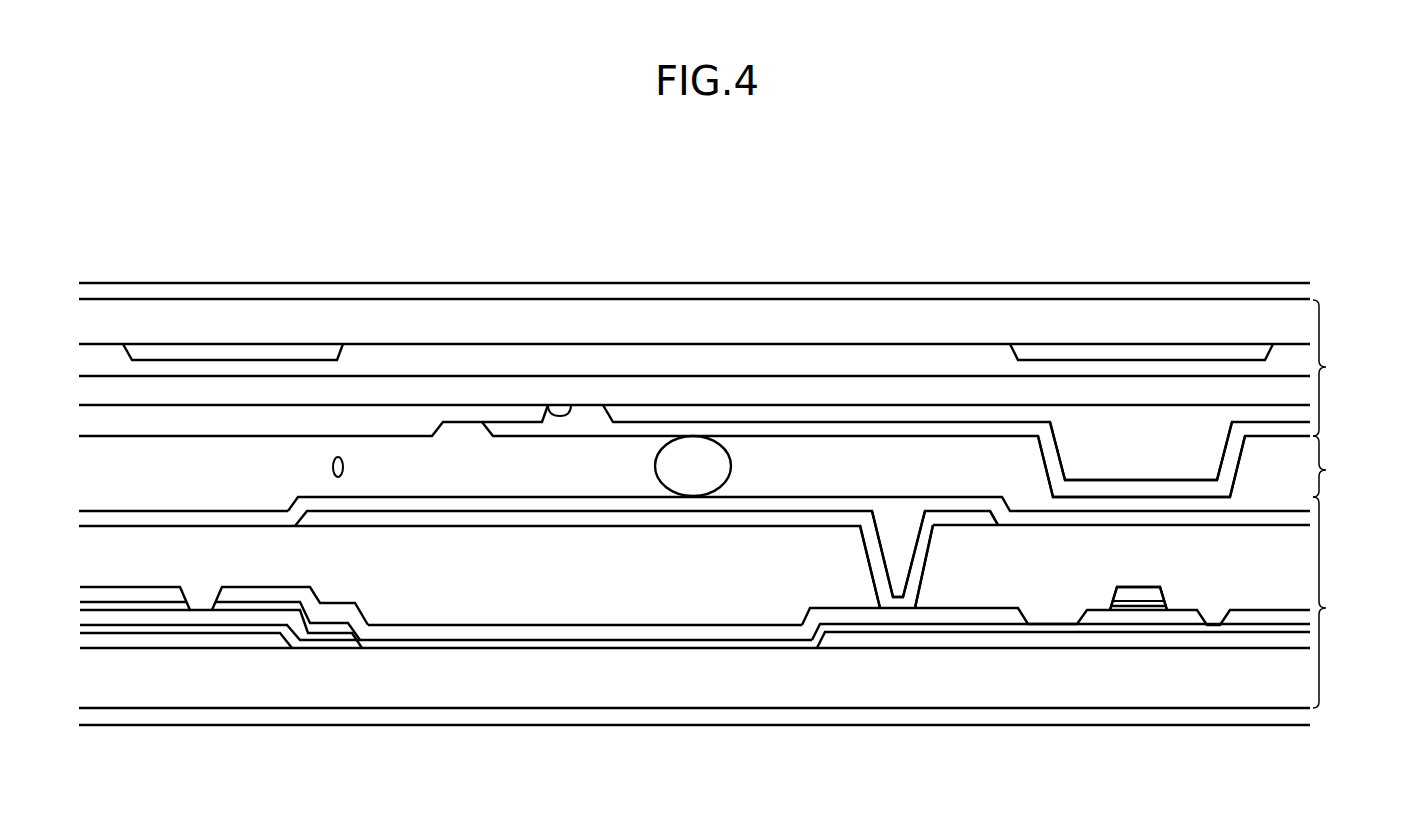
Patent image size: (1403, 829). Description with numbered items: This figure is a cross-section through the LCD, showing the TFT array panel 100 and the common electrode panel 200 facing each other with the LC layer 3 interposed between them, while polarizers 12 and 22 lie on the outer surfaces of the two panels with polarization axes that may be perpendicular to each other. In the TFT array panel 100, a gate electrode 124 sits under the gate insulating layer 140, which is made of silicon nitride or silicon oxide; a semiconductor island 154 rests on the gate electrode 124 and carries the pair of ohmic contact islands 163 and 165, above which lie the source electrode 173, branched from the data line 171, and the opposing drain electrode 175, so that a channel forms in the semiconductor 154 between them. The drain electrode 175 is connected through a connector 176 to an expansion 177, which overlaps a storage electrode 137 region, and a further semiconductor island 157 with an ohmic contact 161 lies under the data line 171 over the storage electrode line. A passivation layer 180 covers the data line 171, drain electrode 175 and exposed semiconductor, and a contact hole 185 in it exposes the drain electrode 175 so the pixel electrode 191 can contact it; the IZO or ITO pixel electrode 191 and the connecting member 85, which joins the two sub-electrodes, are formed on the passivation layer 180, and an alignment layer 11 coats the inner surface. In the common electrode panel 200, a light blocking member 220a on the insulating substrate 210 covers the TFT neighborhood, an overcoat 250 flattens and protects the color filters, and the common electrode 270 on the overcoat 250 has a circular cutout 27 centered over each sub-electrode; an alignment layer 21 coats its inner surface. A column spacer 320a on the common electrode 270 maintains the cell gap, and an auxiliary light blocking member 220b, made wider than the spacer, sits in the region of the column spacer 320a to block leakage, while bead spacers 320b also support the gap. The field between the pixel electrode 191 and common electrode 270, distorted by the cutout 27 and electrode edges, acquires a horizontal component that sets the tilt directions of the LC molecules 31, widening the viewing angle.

The polarizer 22 is at (1311, 291).
The common electrode panel 200 is at (1339, 368).
The LC layer 3 is at (1327, 466).
The TFT array panel 100 is at (1339, 602).
The polarizer 12 is at (1311, 718).
The insulating substrate 210 is at (880, 310).
The light blocking member 220a is at (250, 354).
The auxiliary light blocking member 220b is at (1100, 351).
The overcoat 250 is at (488, 388).
The common electrode 270 is at (388, 412).
The cutout 27 is at (571, 404).
The alignment layer 21 is at (797, 425).
The column spacer 320a is at (1167, 437).
The bead spacer 320b is at (732, 463).
The LC molecule 31 is at (343, 468).
The alignment layer 11 is at (532, 503).
The pixel electrode 191 is at (593, 518).
The passivation layer 180 is at (672, 612).
The contact hole 185 is at (880, 540).
The source electrode 173 is at (133, 595).
The drain electrode 175 is at (270, 593).
The ohmic contact island 163 is at (175, 607).
The ohmic contact island 165 is at (240, 607).
The semiconductor island 154 is at (338, 635).
The gate electrode 124 is at (200, 642).
The gate insulating layer 140 is at (397, 637).
The connector 176 is at (737, 633).
The expansion 177 is at (890, 618).
The storage electrode 137 is at (943, 641).
The connecting member 85 is at (987, 520).
The semiconductor island 157 is at (1117, 618).
The ohmic contact stripe 161 is at (1142, 606).
The data line 171 is at (1155, 597).